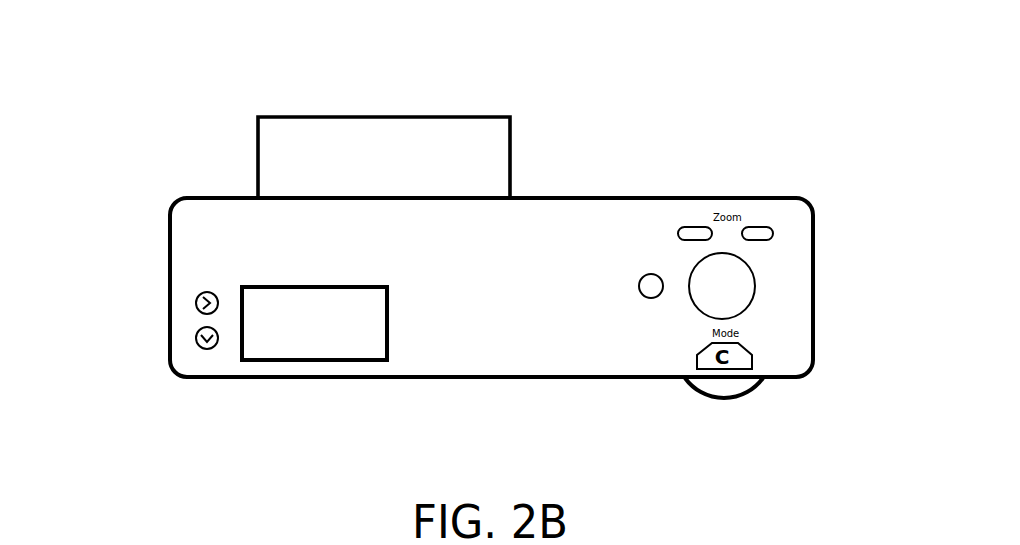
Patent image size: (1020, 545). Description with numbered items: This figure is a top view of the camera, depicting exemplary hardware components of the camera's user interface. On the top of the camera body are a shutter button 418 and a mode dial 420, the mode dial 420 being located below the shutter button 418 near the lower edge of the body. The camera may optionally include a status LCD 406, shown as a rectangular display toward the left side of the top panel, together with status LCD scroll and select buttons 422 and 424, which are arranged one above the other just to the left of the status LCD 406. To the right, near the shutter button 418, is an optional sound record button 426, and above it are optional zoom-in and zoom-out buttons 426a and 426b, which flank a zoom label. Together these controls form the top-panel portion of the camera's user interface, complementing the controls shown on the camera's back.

The status LCD 406 is at (350, 361).
The shutter button 418 is at (748, 308).
The mode dial 420 is at (732, 399).
The status LCD scroll button 422 is at (196, 303).
The status LCD select button 424 is at (196, 340).
The sound record button 426 is at (639, 287).
The zoom-in button 426a is at (688, 225).
The zoom-out button 426b is at (760, 225).